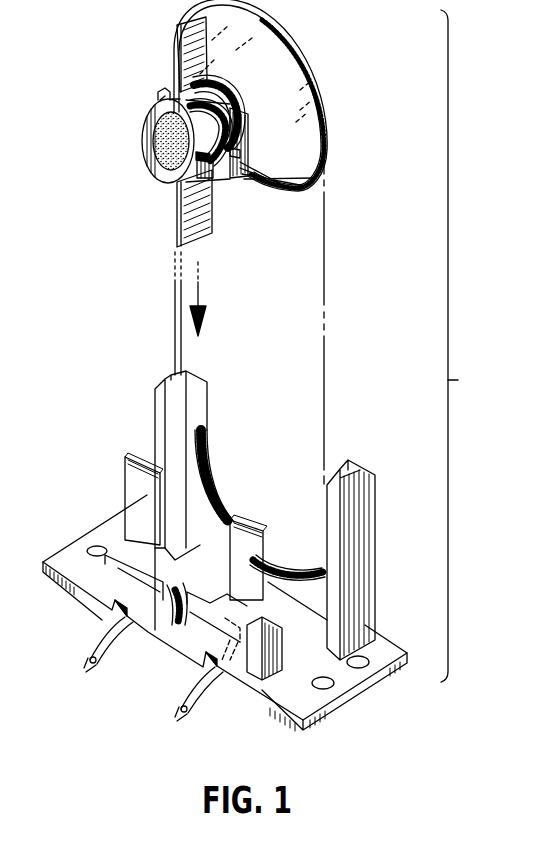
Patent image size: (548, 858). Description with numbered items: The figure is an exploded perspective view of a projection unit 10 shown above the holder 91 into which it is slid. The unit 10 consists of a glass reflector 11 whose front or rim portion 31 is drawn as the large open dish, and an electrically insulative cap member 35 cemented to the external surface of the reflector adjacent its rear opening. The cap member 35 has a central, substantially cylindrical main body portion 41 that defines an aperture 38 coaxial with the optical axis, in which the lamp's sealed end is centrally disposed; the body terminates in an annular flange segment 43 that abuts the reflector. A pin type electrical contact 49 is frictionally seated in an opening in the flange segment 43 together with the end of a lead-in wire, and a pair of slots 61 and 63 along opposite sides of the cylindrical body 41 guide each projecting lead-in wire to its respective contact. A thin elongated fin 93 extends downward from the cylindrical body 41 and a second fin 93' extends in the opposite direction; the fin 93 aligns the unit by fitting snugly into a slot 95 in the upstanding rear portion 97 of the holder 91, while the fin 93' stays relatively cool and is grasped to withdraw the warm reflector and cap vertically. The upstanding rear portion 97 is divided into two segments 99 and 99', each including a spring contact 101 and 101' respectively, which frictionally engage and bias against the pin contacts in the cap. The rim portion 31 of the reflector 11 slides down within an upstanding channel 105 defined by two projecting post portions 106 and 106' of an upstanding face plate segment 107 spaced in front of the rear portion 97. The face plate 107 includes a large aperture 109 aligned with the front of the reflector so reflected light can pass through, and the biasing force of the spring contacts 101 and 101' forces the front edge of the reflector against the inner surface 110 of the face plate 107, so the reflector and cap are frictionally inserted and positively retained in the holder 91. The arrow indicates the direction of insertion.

The projection unit 10 is at (467, 346).
The glass reflector 11 is at (292, 106).
The rim portion 31 is at (212, 126).
The cap member 35 is at (146, 151).
The aperture 38 is at (160, 158).
The main body portion 41 is at (158, 96).
The annular flange segment 43 is at (222, 92).
The electrical contact 49 is at (246, 152).
The slot 61 is at (152, 128).
The slot 63 is at (214, 182).
The holder 91 is at (108, 525).
The fin 93 is at (170, 272).
The fin 93' is at (161, 54).
The slot 95 is at (173, 648).
The upstanding rear portion 97 is at (283, 656).
The segment 99 is at (139, 582).
The segment 99' is at (213, 627).
The spring contact 101 is at (117, 495).
The spring contact 101' is at (271, 554).
The upstanding channel 105 is at (336, 470).
The post portion 106 is at (150, 500).
The post portion 106' is at (380, 560).
The face plate segment 107 is at (380, 520).
The aperture 109 is at (292, 488).
The inner surface 110 is at (324, 583).